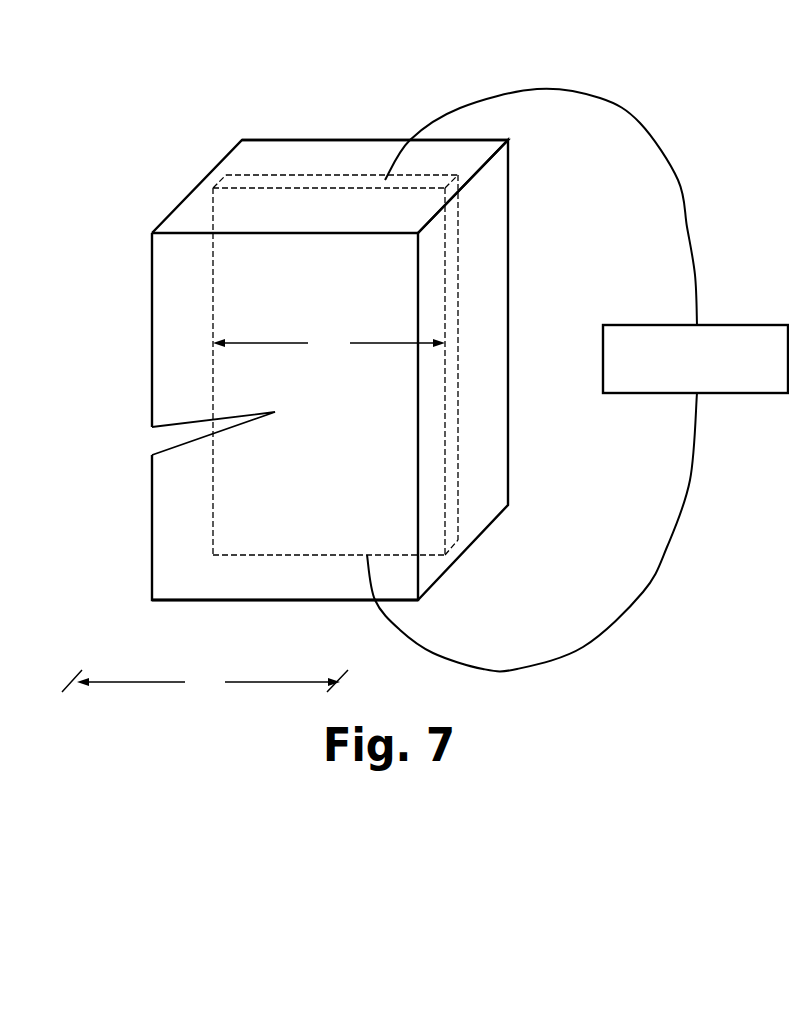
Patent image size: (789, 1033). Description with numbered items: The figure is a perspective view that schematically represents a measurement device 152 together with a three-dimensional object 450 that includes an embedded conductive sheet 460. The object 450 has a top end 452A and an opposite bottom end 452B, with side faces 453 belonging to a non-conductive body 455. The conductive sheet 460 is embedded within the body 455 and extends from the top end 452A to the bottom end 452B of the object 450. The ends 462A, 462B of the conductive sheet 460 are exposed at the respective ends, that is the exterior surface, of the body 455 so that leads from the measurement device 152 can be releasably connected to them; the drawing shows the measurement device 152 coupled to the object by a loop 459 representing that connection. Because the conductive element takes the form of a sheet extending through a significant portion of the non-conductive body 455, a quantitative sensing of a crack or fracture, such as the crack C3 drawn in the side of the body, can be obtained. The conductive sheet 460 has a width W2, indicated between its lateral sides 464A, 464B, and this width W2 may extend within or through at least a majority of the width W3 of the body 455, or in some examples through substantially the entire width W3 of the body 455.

The 3D object 450 is at (321, 328).
The conductive sheet 460 is at (212, 168).
The top end 452A is at (284, 150).
The bottom end 452B is at (212, 600).
The end of conductive sheet 462A is at (355, 182).
The end of conductive sheet 462B is at (307, 554).
The side faces 453 is at (470, 150).
The non-conductive body 455 is at (198, 533).
The first side of crack region 464A is at (213, 313).
The second side of crack region 464B is at (458, 438).
The electromagnetic field loop 459 is at (640, 123).
The measurement device 152 is at (760, 325).
The crack C3 is at (133, 447).
The width of conductive sheet W2 is at (329, 347).
The width of body W3 is at (205, 684).